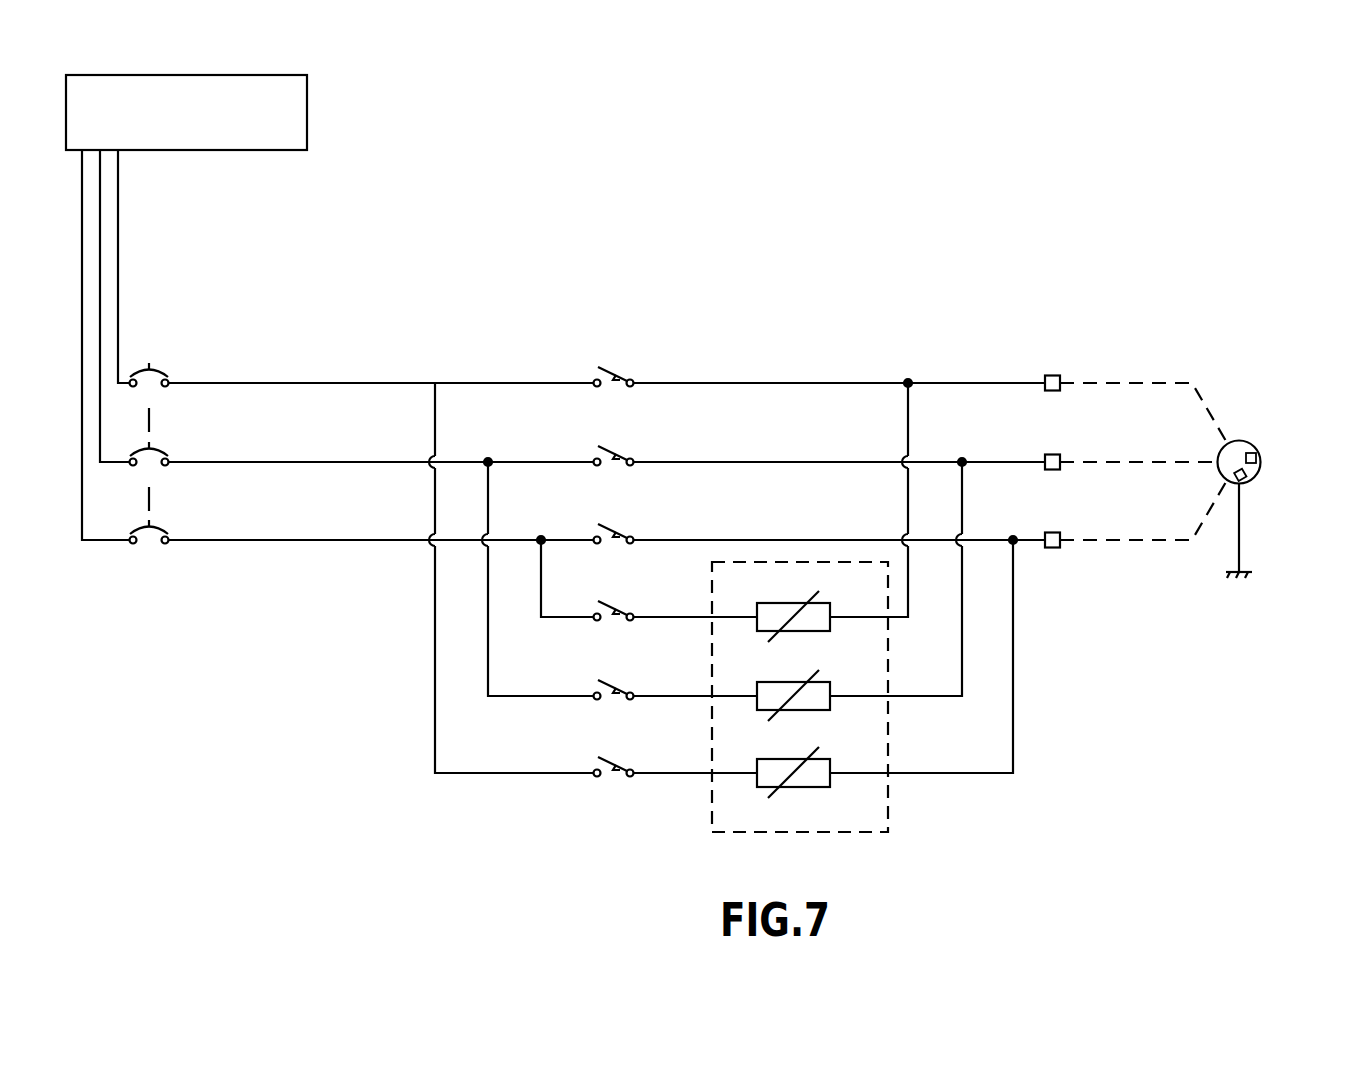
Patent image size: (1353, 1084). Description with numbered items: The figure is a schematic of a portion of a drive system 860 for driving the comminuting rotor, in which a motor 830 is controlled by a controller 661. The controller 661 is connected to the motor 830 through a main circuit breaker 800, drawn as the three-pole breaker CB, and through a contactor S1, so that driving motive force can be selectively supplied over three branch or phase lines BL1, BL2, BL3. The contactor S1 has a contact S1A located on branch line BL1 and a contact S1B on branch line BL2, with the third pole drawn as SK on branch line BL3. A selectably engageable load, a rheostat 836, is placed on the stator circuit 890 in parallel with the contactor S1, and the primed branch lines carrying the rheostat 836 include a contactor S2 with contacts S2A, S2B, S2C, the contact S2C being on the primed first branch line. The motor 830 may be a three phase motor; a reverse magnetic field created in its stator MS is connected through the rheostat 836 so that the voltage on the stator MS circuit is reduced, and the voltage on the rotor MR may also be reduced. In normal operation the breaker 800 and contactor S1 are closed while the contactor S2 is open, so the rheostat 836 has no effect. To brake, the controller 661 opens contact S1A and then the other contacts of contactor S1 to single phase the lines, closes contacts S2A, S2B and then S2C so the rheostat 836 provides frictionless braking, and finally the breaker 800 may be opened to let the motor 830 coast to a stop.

The controller 661 is at (308, 128).
The main circuit breaker 800 is at (193, 405).
The motor 830 is at (1214, 494).
The rheostat 836 is at (863, 832).
The drive system 860 is at (1241, 411).
The stator circuit 890 is at (1100, 568).
The circuit breaker contacts CB is at (149, 442).
The branch line BL1 is at (283, 383).
The branch line BL2 is at (283, 462).
The branch line BL3 is at (283, 540).
The contactor S1 is at (651, 370).
The contact S1A is at (618, 364).
The contact S1B is at (618, 443).
The switch SK is at (614, 521).
The contactor S2 is at (615, 725).
The contact S2A is at (618, 598).
The contact S2B is at (618, 677).
The contact S2C is at (618, 754).
The stator MS is at (1256, 456).
The rotor MR is at (1246, 480).